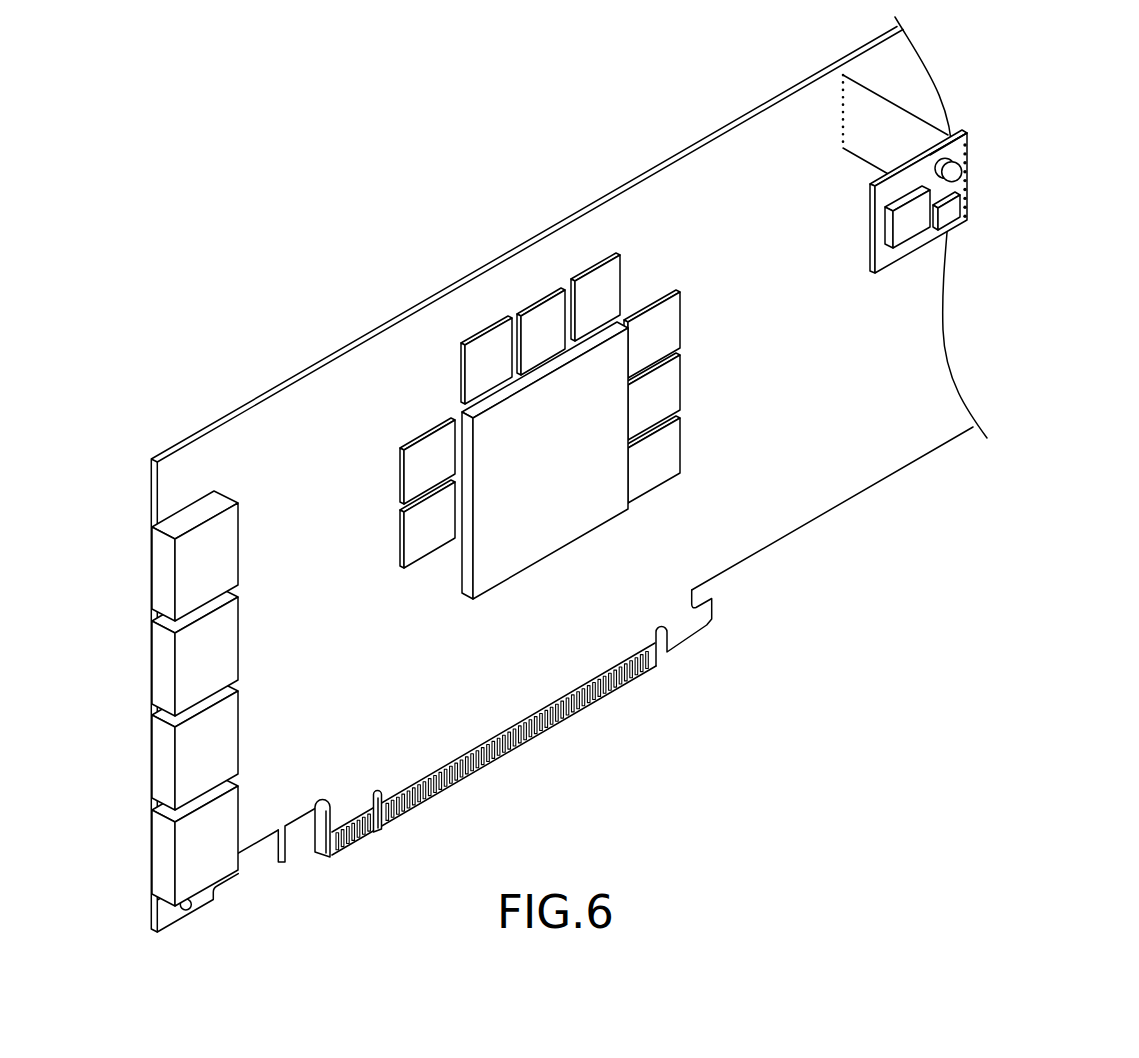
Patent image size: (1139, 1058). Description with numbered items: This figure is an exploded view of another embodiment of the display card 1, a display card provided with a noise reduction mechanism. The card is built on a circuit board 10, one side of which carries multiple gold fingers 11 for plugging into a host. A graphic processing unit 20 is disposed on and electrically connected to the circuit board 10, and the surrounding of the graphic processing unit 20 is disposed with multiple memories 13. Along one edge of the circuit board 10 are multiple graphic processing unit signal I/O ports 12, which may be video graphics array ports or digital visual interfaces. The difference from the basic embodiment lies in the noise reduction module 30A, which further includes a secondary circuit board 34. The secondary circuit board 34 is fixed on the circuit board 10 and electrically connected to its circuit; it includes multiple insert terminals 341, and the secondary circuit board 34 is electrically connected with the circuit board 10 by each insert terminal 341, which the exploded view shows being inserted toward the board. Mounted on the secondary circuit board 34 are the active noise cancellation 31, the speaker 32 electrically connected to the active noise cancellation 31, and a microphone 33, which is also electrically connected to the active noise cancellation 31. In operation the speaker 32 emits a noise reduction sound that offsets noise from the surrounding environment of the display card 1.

The display card 1 is at (559, 40).
The circuit board 10 is at (338, 352).
The gold fingers 11 is at (593, 691).
The graphic processing unit signal I/O ports 12 is at (160, 572).
The memories 13 is at (490, 347).
The graphic processing unit 20 is at (540, 400).
The noise reduction module 30A is at (978, 192).
The active noise cancellation 31 is at (913, 225).
The speaker 32 is at (953, 171).
The microphone 33 is at (953, 216).
The secondary circuit board 34 is at (958, 150).
The insert terminals 341 is at (949, 135).